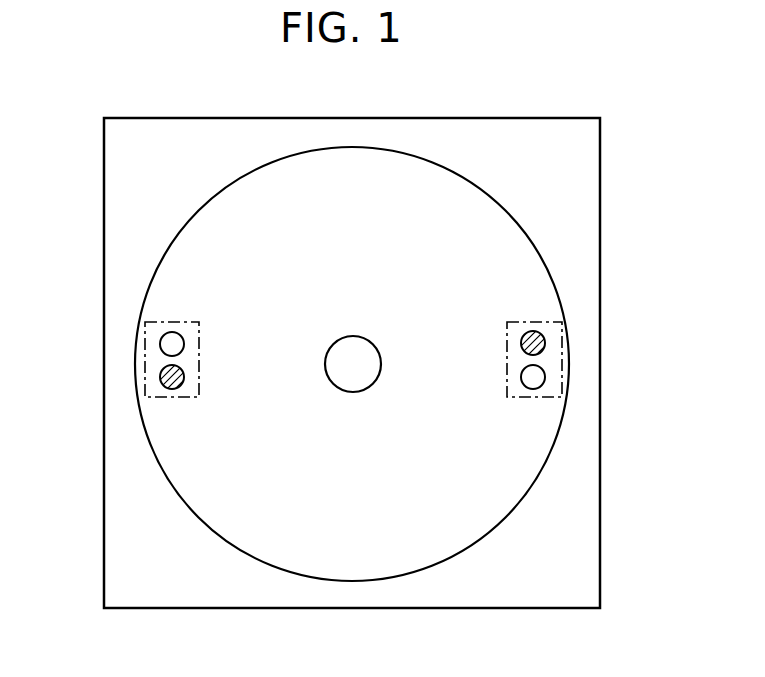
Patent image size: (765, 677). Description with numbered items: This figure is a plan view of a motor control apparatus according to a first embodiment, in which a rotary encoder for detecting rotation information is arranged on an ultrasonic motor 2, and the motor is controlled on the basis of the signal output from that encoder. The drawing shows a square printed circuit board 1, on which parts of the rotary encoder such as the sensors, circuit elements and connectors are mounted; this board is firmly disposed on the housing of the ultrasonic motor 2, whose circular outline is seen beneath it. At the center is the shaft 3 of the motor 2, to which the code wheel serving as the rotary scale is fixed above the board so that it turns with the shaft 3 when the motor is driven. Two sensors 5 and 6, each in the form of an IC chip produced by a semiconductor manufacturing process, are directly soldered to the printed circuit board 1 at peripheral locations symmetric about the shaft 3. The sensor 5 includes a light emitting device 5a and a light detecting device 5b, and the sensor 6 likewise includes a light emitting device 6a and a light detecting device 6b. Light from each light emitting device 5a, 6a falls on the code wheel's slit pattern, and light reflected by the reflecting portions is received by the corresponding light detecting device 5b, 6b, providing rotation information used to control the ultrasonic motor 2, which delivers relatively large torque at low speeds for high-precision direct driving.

The printed circuit board 1 is at (122, 210).
The ultrasonic motor 2 is at (500, 220).
The shaft 3 is at (348, 348).
The sensor 5 is at (190, 322).
The light emitting device 5a is at (163, 376).
The light detecting device 5b is at (172, 344).
The sensor 6 is at (520, 322).
The light emitting device 6a is at (545, 343).
The light detecting device 6b is at (540, 377).